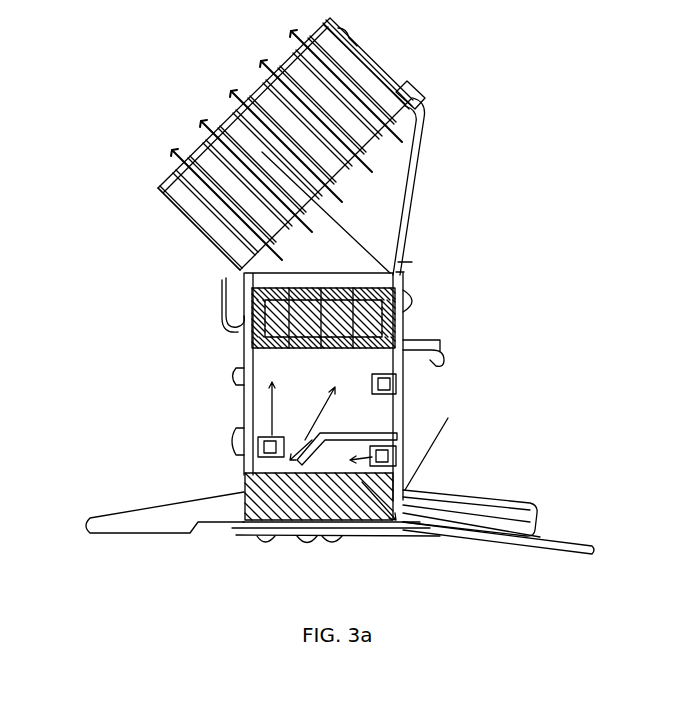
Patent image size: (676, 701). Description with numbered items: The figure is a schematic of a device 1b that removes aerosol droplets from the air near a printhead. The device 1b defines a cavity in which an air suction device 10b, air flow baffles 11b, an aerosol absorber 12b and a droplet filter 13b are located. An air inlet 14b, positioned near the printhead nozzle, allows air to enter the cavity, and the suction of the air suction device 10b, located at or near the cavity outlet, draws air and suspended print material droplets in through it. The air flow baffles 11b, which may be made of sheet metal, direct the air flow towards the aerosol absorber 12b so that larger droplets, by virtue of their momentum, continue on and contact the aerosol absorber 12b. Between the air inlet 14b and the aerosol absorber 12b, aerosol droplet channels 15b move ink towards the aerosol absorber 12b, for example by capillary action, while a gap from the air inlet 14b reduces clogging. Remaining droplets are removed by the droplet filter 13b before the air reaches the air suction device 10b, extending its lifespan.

The device 1b is at (483, 152).
The air suction device 10b is at (198, 142).
The air flow baffle 11b is at (405, 428).
The aerosol absorber 12b is at (248, 494).
The droplet filter 13b is at (248, 344).
The air inlet 14b is at (548, 548).
The aerosol droplet channels 15b is at (418, 550).